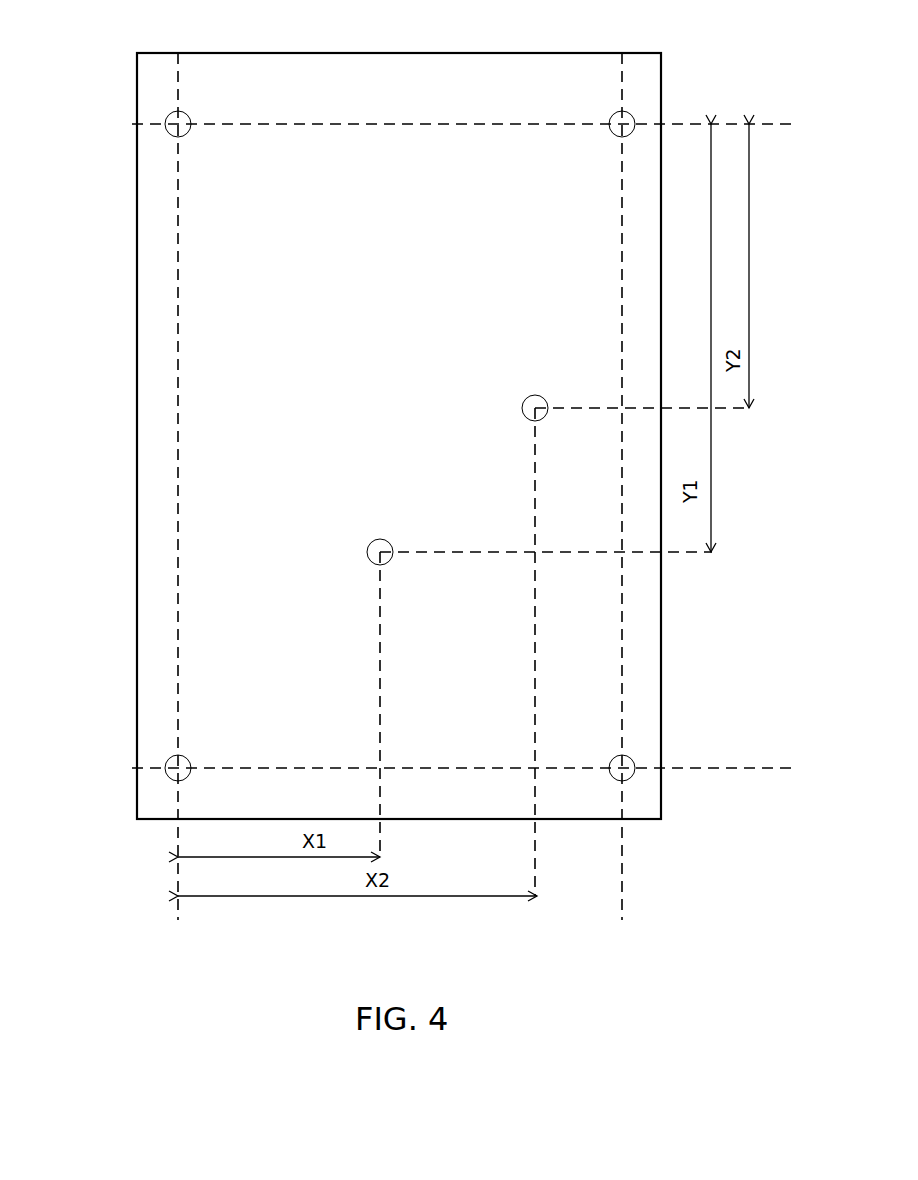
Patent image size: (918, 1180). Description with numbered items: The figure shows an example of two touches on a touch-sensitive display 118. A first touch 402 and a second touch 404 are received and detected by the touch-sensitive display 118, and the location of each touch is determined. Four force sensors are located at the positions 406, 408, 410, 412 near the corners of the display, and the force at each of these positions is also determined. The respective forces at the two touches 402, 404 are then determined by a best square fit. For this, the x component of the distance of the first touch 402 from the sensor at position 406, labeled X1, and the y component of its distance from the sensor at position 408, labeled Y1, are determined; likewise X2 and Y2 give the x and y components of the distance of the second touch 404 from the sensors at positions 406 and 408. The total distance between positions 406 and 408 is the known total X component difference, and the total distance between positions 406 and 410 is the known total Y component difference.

The touch-sensitive display 118 is at (137, 392).
The first touch 402 is at (378, 550).
The second touch 404 is at (533, 406).
The force sensor position 406 is at (176, 122).
The force sensor position 408 is at (622, 125).
The force sensor position 410 is at (176, 766).
The force sensor position 412 is at (628, 772).